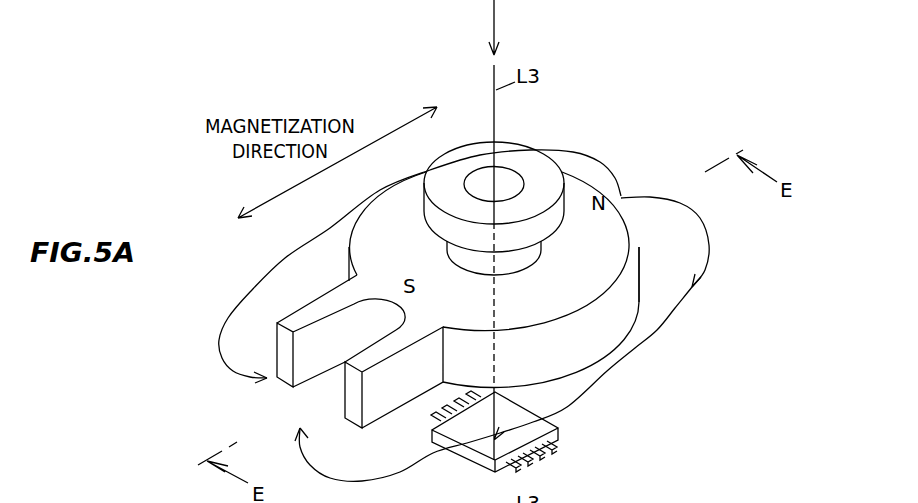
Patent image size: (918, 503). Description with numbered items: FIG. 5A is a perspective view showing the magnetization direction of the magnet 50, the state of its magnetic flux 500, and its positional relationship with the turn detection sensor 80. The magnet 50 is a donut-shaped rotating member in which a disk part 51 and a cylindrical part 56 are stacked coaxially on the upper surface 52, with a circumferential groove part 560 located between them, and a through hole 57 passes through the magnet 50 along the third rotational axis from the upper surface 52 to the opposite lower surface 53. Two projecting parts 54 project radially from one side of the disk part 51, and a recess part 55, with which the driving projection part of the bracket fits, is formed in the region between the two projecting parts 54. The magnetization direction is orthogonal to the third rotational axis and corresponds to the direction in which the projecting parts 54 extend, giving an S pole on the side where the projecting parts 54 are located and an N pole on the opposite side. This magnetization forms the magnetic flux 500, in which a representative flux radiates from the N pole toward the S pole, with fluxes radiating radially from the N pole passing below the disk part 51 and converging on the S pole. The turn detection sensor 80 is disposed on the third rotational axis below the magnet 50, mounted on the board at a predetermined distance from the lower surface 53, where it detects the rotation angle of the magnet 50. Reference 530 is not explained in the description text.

The magnet 50 is at (678, 78).
The disk part 51 is at (640, 252).
The upper surface 52 is at (613, 268).
The lower surface 53 is at (580, 380).
The projecting parts 54 is at (287, 417).
The recess part 55 is at (320, 332).
The cylindrical part 56 is at (556, 211).
The through hole 57 is at (518, 187).
The turn detection sensor 80 is at (538, 431).
The magnetic flux 500 is at (675, 309).
The outer peripheral surface 530 is at (623, 318).
The circumferential groove part 560 is at (541, 253).